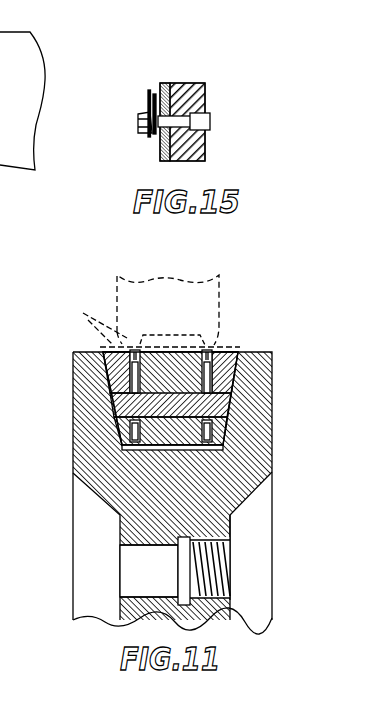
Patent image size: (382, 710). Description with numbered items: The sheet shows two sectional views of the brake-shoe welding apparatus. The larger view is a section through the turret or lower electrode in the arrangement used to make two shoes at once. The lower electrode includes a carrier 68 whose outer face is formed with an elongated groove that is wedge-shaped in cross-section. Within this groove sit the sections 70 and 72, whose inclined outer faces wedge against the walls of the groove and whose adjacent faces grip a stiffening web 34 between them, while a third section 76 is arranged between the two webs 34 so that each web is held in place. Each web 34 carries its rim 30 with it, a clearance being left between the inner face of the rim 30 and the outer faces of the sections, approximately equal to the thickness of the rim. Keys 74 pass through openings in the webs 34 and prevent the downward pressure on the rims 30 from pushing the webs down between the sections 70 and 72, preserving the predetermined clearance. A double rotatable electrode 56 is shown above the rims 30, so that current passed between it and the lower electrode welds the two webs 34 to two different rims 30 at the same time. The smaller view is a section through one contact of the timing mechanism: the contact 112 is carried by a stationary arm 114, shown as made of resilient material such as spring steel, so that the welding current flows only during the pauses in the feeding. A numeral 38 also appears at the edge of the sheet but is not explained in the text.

In FIG. 15, the stationary arm 114 is at (162, 83).
In FIG. 15, the contact 112 is at (193, 122).
In FIG. 11, the rotatable electrode 56 is at (200, 298).
In FIG. 11, the rim 30 is at (93, 320).
In FIG. 11, the stiffening web 34 is at (213, 345).
In FIG. 11, the section 72 is at (223, 372).
In FIG. 11, the section 70 is at (162, 419).
In FIG. 11, the keys 74 is at (132, 412).
In FIG. 11, the carrier 68 is at (95, 460).
In FIG. 11, the third section 76 is at (167, 433).
In FIG. 11, the reference 38 is at (10, 636).